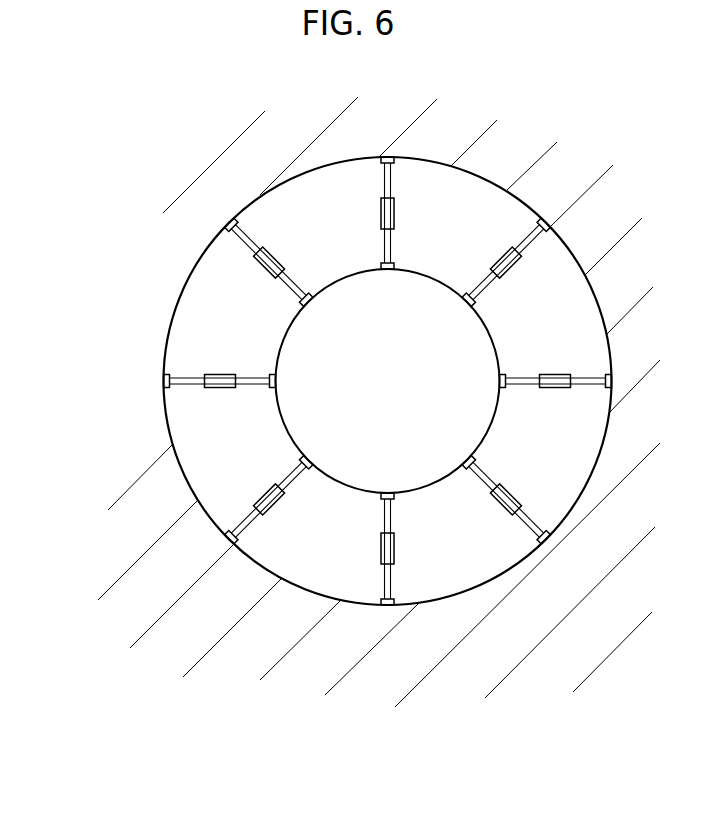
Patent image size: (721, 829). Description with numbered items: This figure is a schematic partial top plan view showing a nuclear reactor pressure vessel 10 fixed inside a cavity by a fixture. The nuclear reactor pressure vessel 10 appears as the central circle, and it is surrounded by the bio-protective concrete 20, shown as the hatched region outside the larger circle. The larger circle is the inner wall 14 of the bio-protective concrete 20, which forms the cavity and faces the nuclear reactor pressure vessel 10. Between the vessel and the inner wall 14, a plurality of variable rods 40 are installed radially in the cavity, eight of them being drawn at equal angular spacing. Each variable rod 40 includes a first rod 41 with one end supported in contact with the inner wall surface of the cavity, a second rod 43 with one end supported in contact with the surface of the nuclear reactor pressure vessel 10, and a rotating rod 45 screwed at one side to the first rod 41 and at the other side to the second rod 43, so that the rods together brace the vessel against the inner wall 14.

The nuclear reactor pressure vessel 10 is at (363, 455).
The inner wall 14 is at (193, 472).
The bio-protective concrete 20 is at (208, 612).
The variable rod 40 is at (317, 441).
The first rod 41 is at (243, 242).
The second rod 43 is at (290, 290).
The rotating rod 45 is at (267, 267).